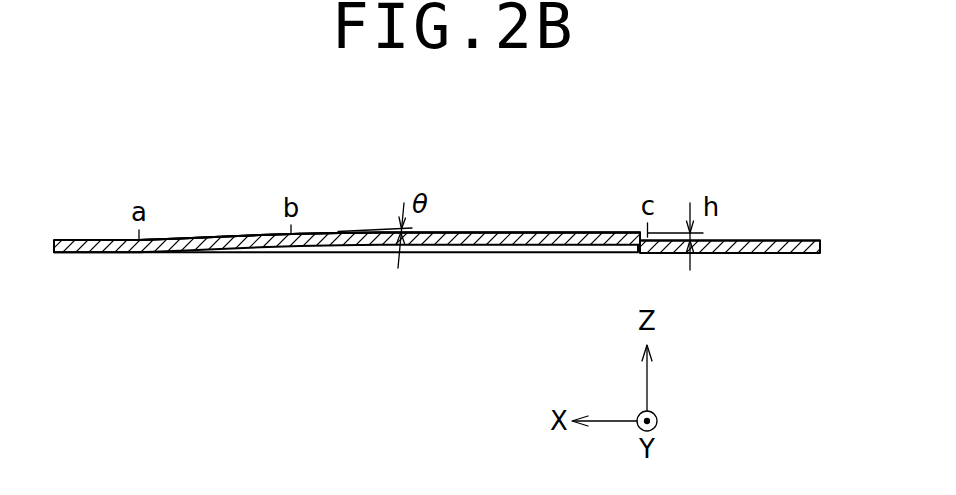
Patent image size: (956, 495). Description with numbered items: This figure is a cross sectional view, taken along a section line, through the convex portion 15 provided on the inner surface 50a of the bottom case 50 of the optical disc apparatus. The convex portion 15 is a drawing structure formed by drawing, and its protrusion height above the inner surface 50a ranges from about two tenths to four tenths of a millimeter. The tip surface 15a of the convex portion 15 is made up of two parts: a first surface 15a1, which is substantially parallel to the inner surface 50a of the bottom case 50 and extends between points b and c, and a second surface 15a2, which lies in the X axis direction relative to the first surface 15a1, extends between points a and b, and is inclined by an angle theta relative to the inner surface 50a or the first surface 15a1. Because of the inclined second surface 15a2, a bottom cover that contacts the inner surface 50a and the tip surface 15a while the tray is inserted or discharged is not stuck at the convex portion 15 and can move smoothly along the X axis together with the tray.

The convex portion 15 is at (607, 232).
The tip surface 15a is at (547, 176).
The first surface 15a1 is at (514, 232).
The second surface 15a2 is at (216, 235).
The bottom case 50 is at (757, 253).
The inner surface 50a is at (790, 240).